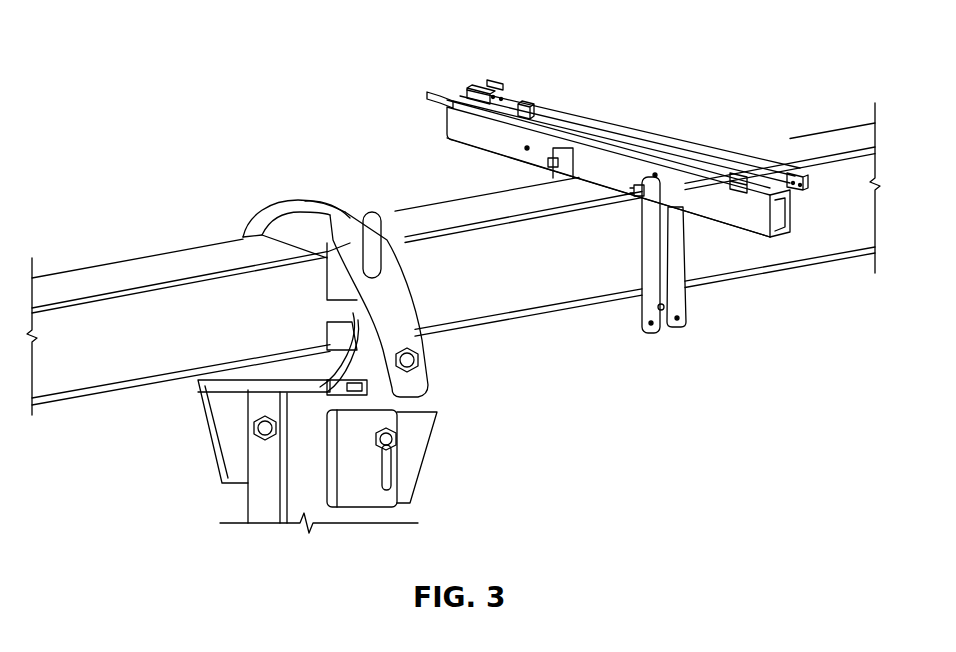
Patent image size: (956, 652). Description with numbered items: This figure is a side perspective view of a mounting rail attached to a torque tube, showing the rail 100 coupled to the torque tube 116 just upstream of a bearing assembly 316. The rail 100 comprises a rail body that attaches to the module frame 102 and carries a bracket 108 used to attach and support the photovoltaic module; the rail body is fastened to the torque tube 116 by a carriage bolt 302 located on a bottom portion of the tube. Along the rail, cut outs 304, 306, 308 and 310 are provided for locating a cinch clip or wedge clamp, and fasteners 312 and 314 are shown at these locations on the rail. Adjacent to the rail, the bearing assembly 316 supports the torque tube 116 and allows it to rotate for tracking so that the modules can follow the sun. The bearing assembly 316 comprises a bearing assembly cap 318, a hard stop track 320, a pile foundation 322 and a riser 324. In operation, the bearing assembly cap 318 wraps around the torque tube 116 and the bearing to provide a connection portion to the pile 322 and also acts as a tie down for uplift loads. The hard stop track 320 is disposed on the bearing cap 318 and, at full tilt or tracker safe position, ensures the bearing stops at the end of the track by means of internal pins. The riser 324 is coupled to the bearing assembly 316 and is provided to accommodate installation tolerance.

The solar rail 100 is at (617, 195).
The module frame 102 is at (755, 177).
The bracket 108 is at (650, 262).
The torque tube 116 is at (477, 305).
The carriage bolt 302 is at (623, 303).
The cut out 304 is at (793, 178).
The cut out 306 is at (507, 88).
The cut out 308 is at (745, 205).
The cut out 310 is at (429, 90).
The fastener nut 312 is at (524, 104).
The fastener nut 314 is at (735, 175).
The bearing assembly 316 is at (328, 256).
The bearing assembly cap 318 is at (387, 302).
The hard stop track 320 is at (330, 200).
The pile foundation 322 is at (295, 437).
The riser 324 is at (387, 440).